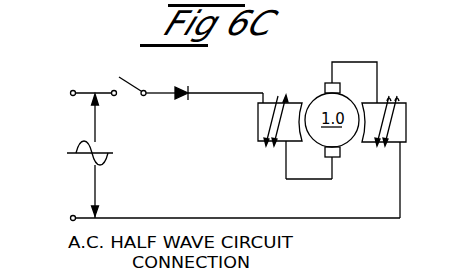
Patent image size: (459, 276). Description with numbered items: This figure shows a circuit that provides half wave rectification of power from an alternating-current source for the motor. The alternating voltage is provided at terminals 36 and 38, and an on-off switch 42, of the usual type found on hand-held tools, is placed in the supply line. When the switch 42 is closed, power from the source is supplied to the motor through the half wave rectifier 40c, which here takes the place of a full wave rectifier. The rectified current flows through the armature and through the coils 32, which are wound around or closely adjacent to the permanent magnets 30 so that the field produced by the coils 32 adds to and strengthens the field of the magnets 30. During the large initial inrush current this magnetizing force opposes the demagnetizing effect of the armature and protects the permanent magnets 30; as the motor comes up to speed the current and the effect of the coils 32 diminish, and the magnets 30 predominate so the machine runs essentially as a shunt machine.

The terminal 36 is at (71, 95).
The on-off switch 42 is at (139, 96).
The half wave rectifier 40c is at (182, 86).
The terminal 38 is at (70, 219).
The permanent magnet 30 is at (258, 134).
The coil 32 is at (276, 97).